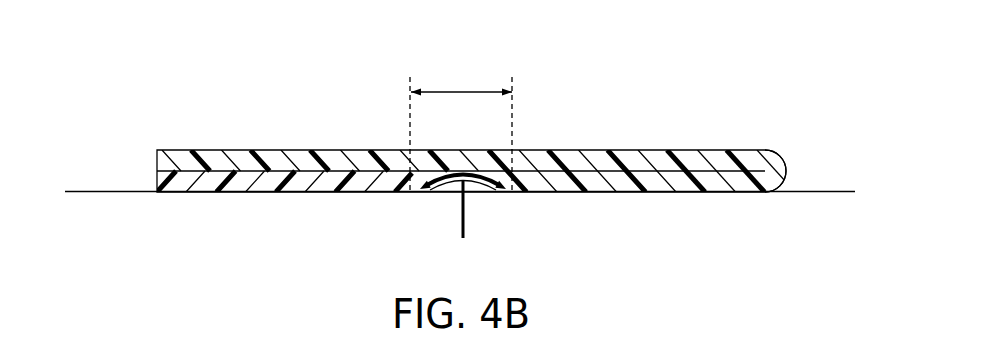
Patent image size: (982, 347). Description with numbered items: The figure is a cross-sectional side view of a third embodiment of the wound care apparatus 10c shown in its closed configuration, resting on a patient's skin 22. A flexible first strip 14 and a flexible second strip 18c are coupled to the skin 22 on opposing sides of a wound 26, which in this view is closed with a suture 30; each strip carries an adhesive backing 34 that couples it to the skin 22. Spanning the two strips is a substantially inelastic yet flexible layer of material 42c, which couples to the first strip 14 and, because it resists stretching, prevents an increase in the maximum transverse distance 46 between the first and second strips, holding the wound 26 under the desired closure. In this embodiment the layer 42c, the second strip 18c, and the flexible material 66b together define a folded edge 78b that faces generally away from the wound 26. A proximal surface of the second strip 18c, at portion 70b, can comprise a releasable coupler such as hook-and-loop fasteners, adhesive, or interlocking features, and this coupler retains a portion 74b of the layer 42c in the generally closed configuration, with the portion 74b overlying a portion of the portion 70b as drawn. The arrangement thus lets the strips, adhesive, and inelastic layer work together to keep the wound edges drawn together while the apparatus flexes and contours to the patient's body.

The wound care apparatus 10c is at (110, 96).
The patient's skin 22 is at (97, 190).
The first strip 14 is at (273, 180).
The layer of material 42c is at (275, 150).
The portion of layer 74b is at (360, 150).
The maximum transverse distance 46 is at (468, 89).
The wound 26 is at (436, 203).
The suture 30 is at (473, 193).
The adhesive backing 34 is at (592, 191).
The second strip 18c is at (660, 191).
The portion of strip 70b is at (735, 178).
The flexible material 66b is at (645, 120).
The folded edge 78b is at (799, 156).